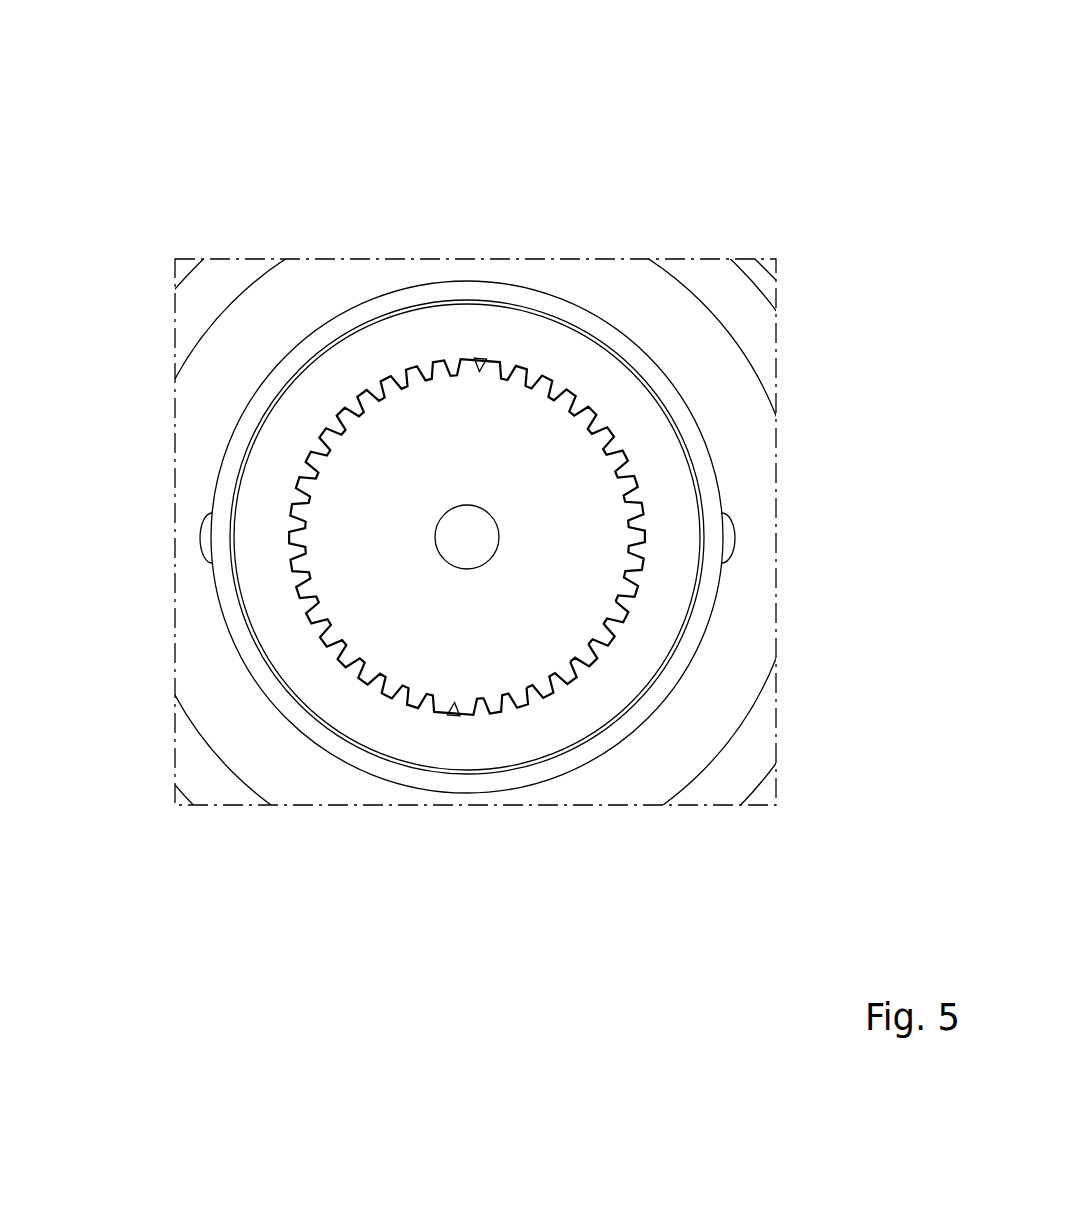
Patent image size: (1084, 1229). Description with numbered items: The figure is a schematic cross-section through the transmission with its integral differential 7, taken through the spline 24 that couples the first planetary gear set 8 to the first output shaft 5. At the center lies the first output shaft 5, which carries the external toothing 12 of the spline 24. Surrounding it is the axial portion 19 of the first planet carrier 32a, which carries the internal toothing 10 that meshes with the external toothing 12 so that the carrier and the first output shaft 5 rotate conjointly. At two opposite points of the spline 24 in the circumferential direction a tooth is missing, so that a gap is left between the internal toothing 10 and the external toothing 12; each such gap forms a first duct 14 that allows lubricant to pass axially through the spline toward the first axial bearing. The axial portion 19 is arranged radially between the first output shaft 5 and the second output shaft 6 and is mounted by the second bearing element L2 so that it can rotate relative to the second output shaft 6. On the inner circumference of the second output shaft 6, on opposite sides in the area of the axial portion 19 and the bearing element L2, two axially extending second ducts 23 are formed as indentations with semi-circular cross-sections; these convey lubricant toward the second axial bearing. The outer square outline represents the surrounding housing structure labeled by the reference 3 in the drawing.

The actuator assembly 3 is at (832, 200).
The first output shaft 5 is at (422, 632).
The second output shaft 6 is at (609, 283).
The integral differential 7 is at (745, 260).
The first planetary gear set 8 is at (698, 290).
The internal toothing 10 is at (632, 500).
The external toothing 12 is at (630, 625).
The first duct 14 is at (483, 356).
The axial portion 19 is at (433, 337).
The first planet carrier 32a is at (467, 537).
The second bearing element L2 is at (477, 292).
The second duct 23 is at (200, 537).
The spline 24 is at (576, 695).